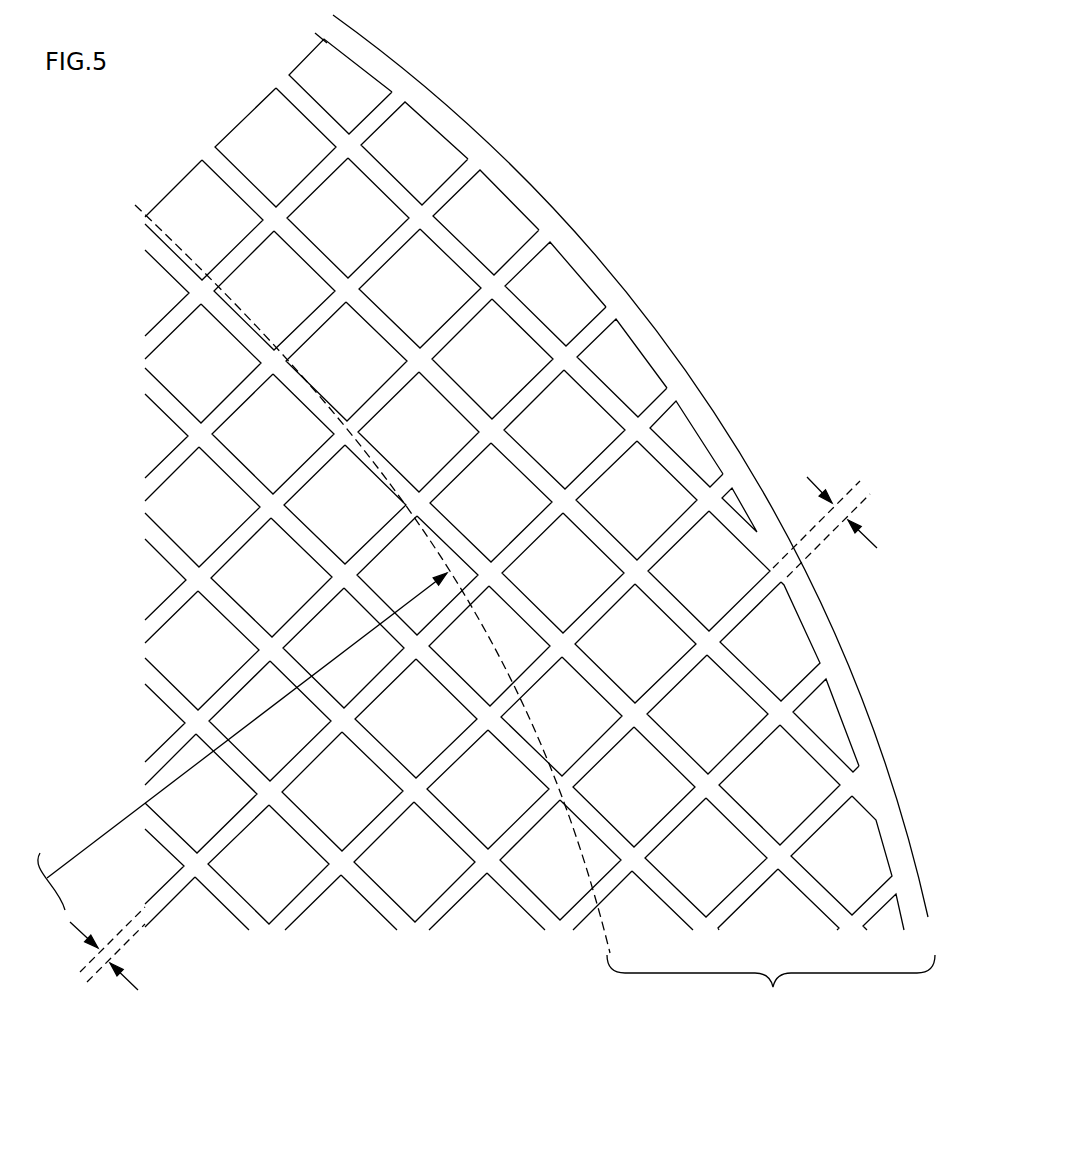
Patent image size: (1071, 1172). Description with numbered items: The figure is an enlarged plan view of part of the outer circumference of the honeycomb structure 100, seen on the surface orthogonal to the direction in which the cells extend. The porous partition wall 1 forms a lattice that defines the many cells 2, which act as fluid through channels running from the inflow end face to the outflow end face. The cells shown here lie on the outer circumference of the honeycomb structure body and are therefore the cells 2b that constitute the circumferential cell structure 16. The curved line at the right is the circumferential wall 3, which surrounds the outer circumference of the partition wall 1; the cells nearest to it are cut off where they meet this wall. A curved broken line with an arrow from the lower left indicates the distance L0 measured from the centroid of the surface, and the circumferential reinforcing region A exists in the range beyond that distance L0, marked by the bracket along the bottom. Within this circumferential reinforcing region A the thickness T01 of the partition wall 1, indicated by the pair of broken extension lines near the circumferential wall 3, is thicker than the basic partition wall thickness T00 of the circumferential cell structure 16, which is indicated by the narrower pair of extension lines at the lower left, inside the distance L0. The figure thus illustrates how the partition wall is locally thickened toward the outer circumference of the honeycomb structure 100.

The honeycomb structure 100 is at (818, 51).
The partition wall 1 is at (527, 328).
The cells 2 is at (433, 277).
The cells 2b is at (420, 288).
The circumferential wall 3 is at (648, 337).
The circumferential cell structure 16 is at (467, 802).
The distance L0 is at (242, 741).
The basic partition wall thickness T00 is at (123, 948).
The thickness of the partition wall T01 is at (842, 527).
The circumferential reinforcing region A is at (771, 988).